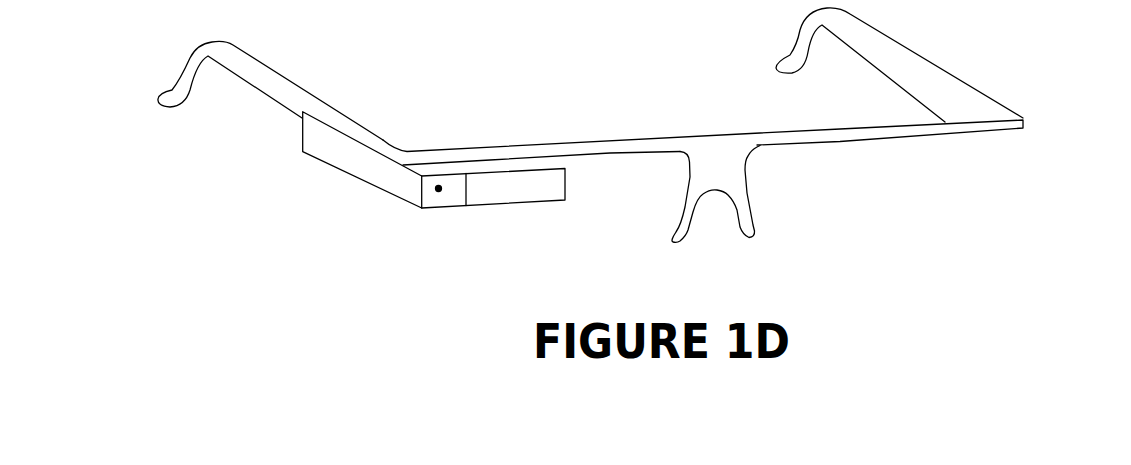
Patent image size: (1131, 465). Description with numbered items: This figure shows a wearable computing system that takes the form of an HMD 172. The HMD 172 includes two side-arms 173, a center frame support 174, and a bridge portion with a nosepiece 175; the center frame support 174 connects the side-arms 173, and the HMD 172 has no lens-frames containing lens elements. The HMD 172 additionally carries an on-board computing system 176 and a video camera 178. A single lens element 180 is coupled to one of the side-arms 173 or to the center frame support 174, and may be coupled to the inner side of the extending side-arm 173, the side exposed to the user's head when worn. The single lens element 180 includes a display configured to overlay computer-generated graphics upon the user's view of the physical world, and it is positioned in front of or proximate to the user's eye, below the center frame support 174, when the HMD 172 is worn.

The HMD 172 is at (1026, 182).
The side-arms 173 is at (263, 82).
The center frame support 174 is at (612, 143).
The nosepiece 175 is at (738, 187).
The on-board computing system 176 is at (340, 170).
The video camera 178 is at (437, 192).
The single lens element 180 is at (520, 205).